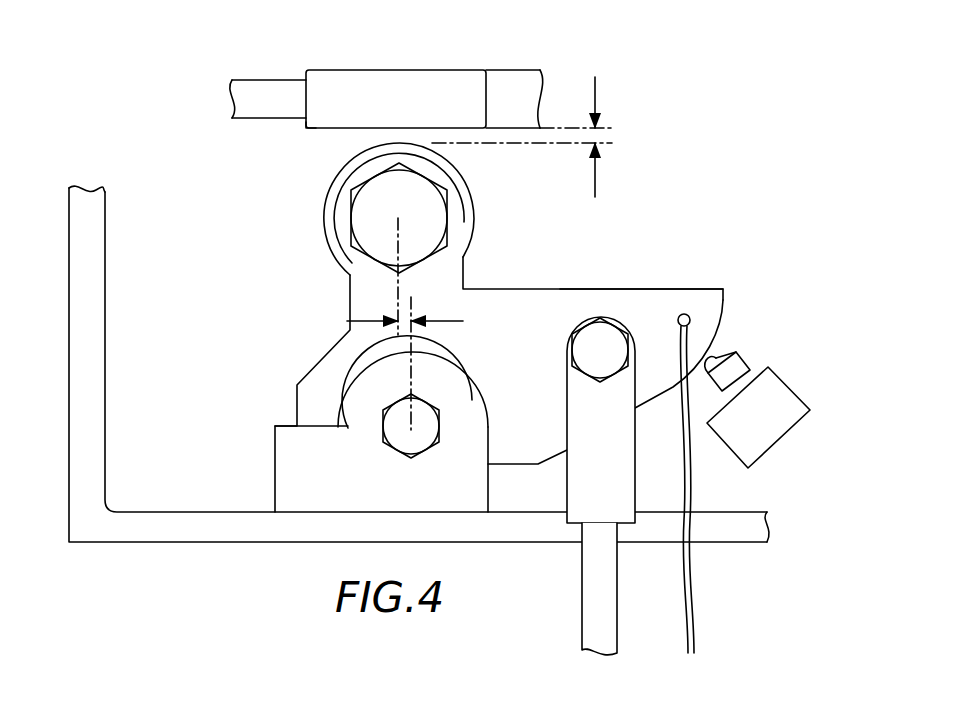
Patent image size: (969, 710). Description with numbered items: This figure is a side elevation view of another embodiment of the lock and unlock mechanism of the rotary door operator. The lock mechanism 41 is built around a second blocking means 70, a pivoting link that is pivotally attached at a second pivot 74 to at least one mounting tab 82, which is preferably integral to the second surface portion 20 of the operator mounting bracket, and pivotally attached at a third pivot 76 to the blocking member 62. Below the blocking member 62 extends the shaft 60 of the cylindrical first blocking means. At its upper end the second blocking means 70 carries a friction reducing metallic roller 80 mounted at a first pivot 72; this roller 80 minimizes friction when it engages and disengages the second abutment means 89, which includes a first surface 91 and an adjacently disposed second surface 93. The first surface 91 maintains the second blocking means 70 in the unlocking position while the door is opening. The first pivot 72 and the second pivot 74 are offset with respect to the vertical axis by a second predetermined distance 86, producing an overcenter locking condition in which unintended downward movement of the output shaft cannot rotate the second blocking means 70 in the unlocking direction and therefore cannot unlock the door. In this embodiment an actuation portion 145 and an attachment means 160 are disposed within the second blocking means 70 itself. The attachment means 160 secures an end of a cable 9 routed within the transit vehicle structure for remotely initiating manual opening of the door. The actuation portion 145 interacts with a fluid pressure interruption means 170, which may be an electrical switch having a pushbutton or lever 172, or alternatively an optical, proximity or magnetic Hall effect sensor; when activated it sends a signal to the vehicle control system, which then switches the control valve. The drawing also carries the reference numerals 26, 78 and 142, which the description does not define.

The cable 9 is at (695, 602).
The second surface portion 20 is at (105, 342).
The shaft 26 is at (264, 88).
The lock mechanism 41 is at (713, 187).
The shaft 60 is at (603, 585).
The blocking member 62 is at (617, 477).
The second blocking means 70 is at (522, 295).
The first pivot 72 is at (432, 215).
The second pivot 74 is at (408, 448).
The third pivot 76 is at (577, 353).
The plate edge 78 is at (647, 257).
The metallic roller 80 is at (325, 213).
The mounting tab 82 is at (275, 463).
The second predetermined distance 86 is at (411, 318).
The second abutment means 89 is at (462, 70).
The first surface 91 is at (318, 128).
The second surface 93 is at (537, 82).
The sensor assembly 142 is at (785, 265).
The actuation portion 145 is at (723, 318).
The attachment means 160 is at (686, 313).
The fluid pressure interruption means 170 is at (777, 440).
The lever 172 is at (708, 372).